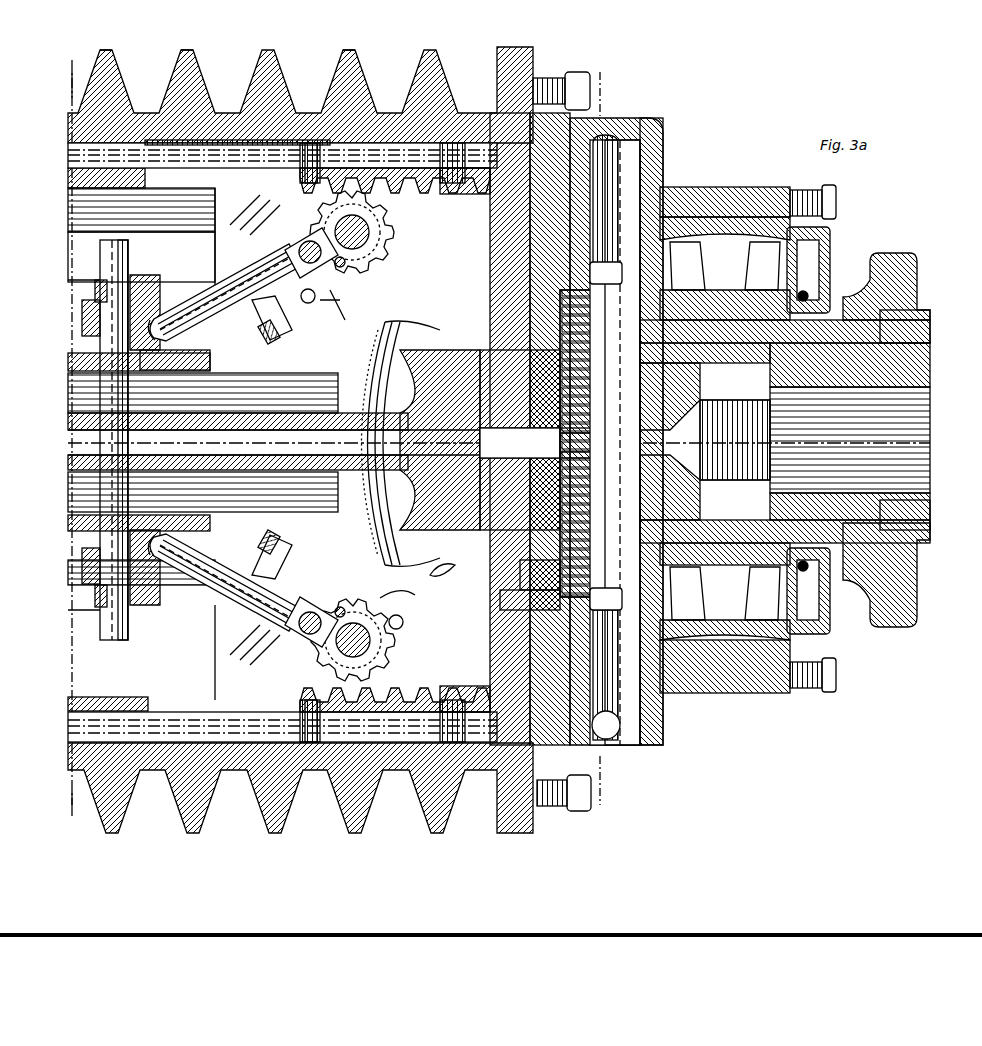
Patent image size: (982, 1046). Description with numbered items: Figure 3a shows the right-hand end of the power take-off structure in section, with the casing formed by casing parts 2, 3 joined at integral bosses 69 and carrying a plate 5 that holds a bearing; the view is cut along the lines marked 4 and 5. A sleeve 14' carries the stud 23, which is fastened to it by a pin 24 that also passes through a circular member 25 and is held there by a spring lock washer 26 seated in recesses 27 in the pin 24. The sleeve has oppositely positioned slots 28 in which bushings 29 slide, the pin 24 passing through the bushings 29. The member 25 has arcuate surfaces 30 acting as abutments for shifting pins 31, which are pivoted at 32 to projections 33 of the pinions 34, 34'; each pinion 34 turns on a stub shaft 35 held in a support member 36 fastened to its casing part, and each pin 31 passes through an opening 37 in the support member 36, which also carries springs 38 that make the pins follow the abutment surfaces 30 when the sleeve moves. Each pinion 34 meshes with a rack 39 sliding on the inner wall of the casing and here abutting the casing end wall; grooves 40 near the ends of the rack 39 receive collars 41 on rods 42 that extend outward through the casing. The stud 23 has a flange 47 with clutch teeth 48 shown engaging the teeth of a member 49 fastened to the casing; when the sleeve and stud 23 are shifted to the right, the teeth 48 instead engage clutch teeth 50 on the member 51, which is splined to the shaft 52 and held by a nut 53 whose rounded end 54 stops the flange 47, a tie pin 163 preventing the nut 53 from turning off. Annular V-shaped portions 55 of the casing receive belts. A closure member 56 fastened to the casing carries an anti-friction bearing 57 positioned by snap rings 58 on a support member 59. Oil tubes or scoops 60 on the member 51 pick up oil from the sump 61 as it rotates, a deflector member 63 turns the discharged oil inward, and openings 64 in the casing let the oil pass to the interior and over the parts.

The casing part 2 is at (300, 140).
The casing part 3 is at (238, 770).
The section line 4- 4 is at (78, 810).
The plate 5 is at (626, 816).
The pin 14' is at (199, 357).
The stud 23 is at (478, 378).
The pin 24 is at (130, 638).
The circular member 25 is at (168, 610).
The spring lock washer 26 is at (82, 586).
The recesses 27 is at (100, 612).
The slots 28 is at (190, 545).
The bushings 29 is at (82, 548).
The arcuate surfaces 30 is at (166, 600).
The shifting pins 31 is at (248, 540).
The pivot 32 is at (305, 568).
The projections 33 is at (330, 596).
The pinion 34 is at (346, 305).
The bushing 34' is at (405, 587).
The stub shaft 35 is at (412, 620).
The support member 36 is at (216, 648).
The opening 37 is at (258, 545).
The springs 38 is at (402, 628).
The rack 39 is at (428, 712).
The grooves 40 is at (462, 690).
The collars 41 is at (468, 700).
The rods 42 is at (80, 718).
The flange 47 is at (500, 324).
The clutch teeth 48 is at (518, 576).
The member 49 is at (515, 594).
The clutch teeth 50 is at (520, 522).
The member 51 is at (430, 580).
The shaft 52 is at (930, 420).
The lock nut 53 is at (705, 431).
The rounded end 54 is at (485, 510).
The annular V shaped portions 55 is at (362, 795).
The closure member 56 is at (665, 170).
The anti-friction bearing 57 is at (720, 690).
The snap rings 58 is at (835, 280).
The support member 59 is at (900, 260).
The oil tubes 60 is at (660, 738).
The sump 61 is at (608, 745).
The deflector member 63 is at (650, 700).
The openings 64 is at (492, 640).
The bosses 69 is at (364, 555).
The tie pin 163 is at (560, 446).